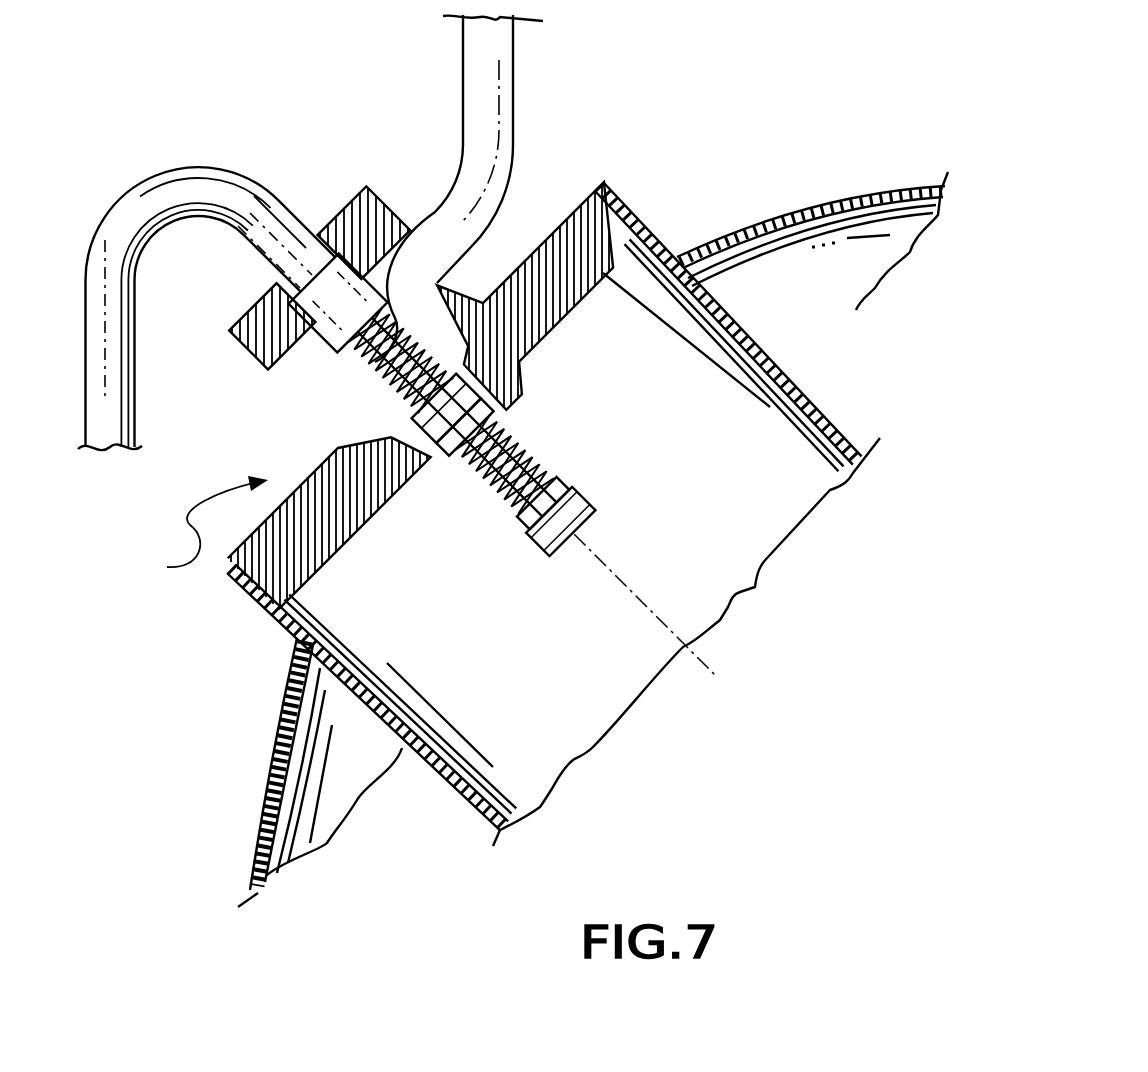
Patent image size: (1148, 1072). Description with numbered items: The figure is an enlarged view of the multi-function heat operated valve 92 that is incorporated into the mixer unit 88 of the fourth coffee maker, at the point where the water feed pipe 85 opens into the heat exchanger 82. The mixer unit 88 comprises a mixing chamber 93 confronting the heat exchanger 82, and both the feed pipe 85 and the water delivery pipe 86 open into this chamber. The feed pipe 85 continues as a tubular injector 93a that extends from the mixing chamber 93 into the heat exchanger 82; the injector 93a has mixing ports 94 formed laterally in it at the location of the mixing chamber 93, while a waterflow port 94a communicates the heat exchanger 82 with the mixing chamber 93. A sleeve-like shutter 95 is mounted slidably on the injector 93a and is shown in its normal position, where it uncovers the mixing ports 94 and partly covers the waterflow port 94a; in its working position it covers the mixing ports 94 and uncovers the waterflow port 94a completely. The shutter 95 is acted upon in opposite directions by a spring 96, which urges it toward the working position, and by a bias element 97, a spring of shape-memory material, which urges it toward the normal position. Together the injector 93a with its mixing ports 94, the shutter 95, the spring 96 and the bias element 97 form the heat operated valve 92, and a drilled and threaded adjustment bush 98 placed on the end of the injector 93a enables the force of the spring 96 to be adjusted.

The heat exchanger 82 is at (297, 645).
The water feed pipe 85 is at (107, 413).
The water delivery pipe 86 is at (500, 78).
The mixer unit 88 is at (191, 534).
The multi-function heat operated valve 92 is at (440, 487).
The mixing chamber 93 is at (260, 360).
The tubular injector 93a is at (530, 489).
The mixing ports 94 is at (378, 370).
The waterflow port 94a is at (490, 402).
The sleeve-like shutter 95 is at (487, 405).
The spring 96 is at (520, 448).
The bias element 97 is at (342, 215).
The adjustment bush 98 is at (547, 545).